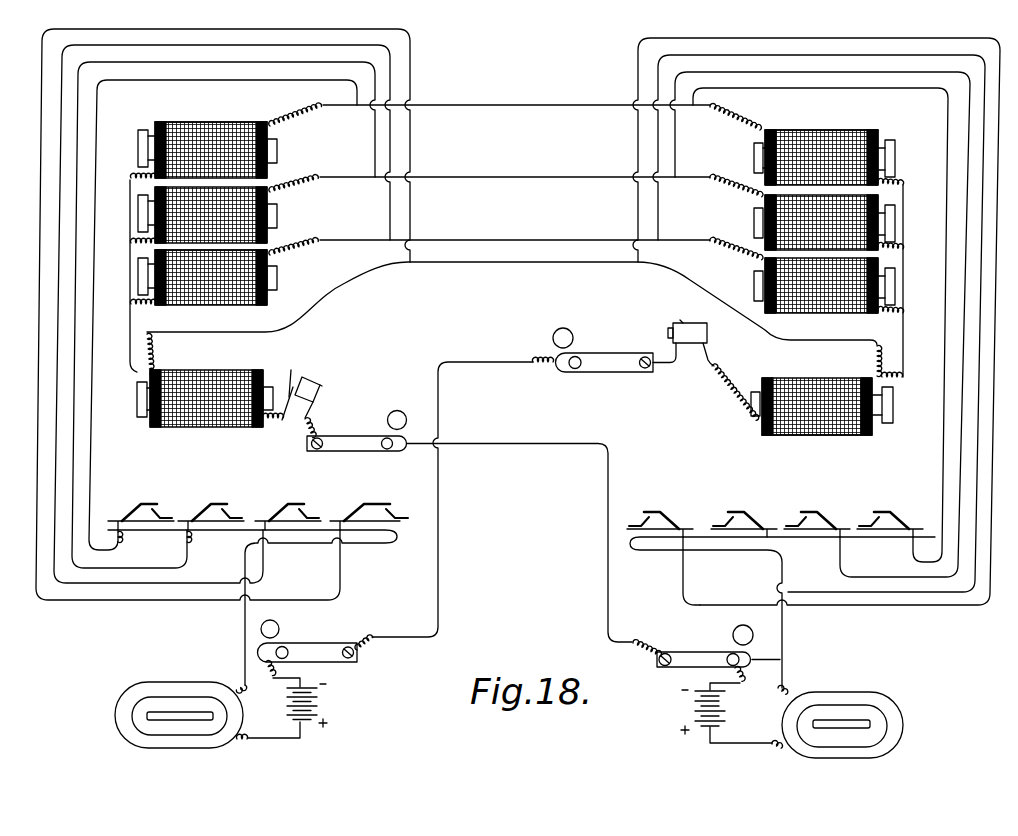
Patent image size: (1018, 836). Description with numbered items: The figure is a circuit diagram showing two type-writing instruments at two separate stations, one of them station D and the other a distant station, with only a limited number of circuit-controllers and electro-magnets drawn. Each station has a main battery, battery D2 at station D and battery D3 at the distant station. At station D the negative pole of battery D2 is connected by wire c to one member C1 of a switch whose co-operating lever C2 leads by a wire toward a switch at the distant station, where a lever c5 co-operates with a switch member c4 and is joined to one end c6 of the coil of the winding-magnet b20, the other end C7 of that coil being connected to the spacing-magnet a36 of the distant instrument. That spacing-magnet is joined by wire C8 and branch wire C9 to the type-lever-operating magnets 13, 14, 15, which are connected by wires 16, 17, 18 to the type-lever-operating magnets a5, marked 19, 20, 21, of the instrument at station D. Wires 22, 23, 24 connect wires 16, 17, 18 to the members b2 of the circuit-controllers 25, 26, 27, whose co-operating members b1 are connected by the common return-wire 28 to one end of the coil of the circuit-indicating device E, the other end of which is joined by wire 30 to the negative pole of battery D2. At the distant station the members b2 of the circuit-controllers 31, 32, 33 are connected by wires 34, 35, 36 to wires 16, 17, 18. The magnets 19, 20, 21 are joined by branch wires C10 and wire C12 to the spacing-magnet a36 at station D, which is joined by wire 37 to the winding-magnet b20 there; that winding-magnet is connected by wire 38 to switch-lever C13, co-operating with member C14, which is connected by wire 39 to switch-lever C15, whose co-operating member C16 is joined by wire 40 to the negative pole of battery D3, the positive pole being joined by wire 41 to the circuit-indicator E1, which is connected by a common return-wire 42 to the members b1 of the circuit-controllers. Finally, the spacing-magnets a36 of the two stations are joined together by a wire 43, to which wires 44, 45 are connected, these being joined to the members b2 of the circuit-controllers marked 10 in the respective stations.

The circuit-controller 10 is at (511, 504).
The type-lever-operating magnet 13 is at (277, 270).
The type-lever-operating magnet 14 is at (277, 208).
The type-lever-operating magnet 15 is at (277, 150).
The wire 16 is at (515, 240).
The wire 17 is at (515, 177).
The wire 18 is at (515, 107).
The type-lever-operating magnet 19 is at (895, 280).
The type-lever-operating magnet 20 is at (895, 215).
The type-lever-operating magnet 21 is at (895, 150).
The wire 22 is at (975, 493).
The wire 23 is at (958, 465).
The wire 24 is at (690, 97).
The circuit-controller 25 is at (744, 508).
The circuit-controller 26 is at (817, 508).
The circuit-controller 27 is at (862, 512).
The common return-wire 28 is at (722, 550).
The wire 30 is at (746, 748).
The circuit-controller 31 is at (288, 499).
The circuit-controller 32 is at (211, 500).
The circuit-controller 33 is at (141, 500).
The wire 34 is at (250, 45).
The wire 35 is at (207, 62).
The wire 36 is at (120, 548).
The wire 37 is at (718, 385).
The wire 38 is at (683, 352).
The wire 39 is at (439, 409).
The wire 40 is at (280, 679).
The wire 41 is at (278, 740).
The common return-wire 42 is at (375, 531).
The wire 43 is at (496, 264).
The wire 44 is at (683, 590).
The wire 45 is at (42, 266).
The type-lever-operating magnet a5 is at (258, 122).
The spacing-magnet a36 is at (504, 412).
The circuit-controller member b1 is at (874, 548).
The circuit-controller member b2 is at (140, 503).
The winding-magnet b20 is at (322, 388).
The wire c is at (742, 685).
The switch member C1 is at (782, 657).
The switch lever C2 is at (697, 652).
The relay pivot c4 is at (402, 452).
The switch lever c5 is at (354, 437).
The end of winding-magnet coil c6 is at (319, 406).
The end of winding-magnet coil C7 is at (292, 370).
The wire C8 is at (128, 345).
The branch wire C9 is at (142, 306).
The branch wire C10 is at (884, 345).
The wire C12 is at (903, 337).
The switch-lever C13 is at (614, 372).
The switch member C14 is at (567, 372).
The switch-lever C15 is at (318, 645).
The switch member C16 is at (279, 630).
The station D is at (822, 423).
The main battery D2 is at (690, 705).
The main battery D3 is at (320, 705).
The circuit-indicating device E is at (848, 692).
The circuit-indicator E1 is at (186, 683).